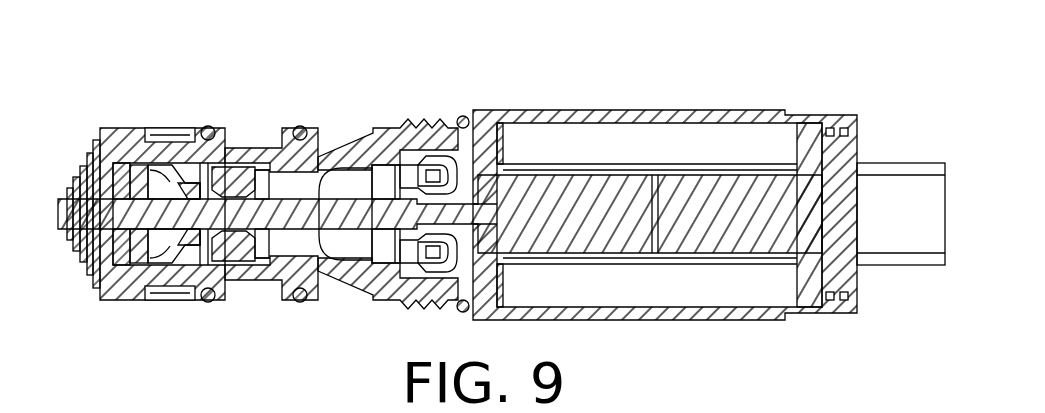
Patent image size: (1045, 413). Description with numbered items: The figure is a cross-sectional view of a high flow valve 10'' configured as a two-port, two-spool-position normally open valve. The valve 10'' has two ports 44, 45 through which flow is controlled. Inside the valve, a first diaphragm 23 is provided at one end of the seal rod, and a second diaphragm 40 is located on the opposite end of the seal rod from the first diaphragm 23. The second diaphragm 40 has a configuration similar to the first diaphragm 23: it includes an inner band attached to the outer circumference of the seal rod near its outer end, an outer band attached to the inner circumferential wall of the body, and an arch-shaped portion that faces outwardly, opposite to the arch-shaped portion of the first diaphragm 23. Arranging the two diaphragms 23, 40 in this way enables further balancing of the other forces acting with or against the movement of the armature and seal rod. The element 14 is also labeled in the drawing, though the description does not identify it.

The high flow valve 10'' is at (501, 176).
The seal 14 is at (231, 260).
The first diaphragm 23 is at (433, 170).
The second diaphragm 40 is at (173, 138).
The port 44 is at (345, 130).
The port 45 is at (250, 130).